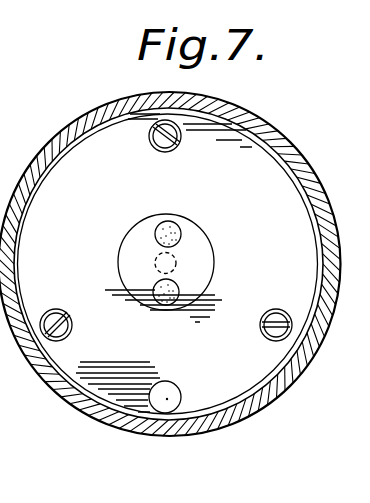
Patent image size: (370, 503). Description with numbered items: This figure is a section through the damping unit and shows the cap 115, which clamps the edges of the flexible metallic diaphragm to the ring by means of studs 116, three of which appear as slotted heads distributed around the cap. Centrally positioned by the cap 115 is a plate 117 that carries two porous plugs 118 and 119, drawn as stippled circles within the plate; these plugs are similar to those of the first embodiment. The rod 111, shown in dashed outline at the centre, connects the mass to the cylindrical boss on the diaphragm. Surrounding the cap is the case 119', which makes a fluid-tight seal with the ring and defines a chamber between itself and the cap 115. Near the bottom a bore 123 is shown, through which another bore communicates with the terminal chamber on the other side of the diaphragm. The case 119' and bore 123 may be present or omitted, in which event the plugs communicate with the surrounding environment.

The rod 111 is at (160, 271).
The cap 115 is at (253, 157).
The studs 116 is at (181, 121).
The plate 117 is at (176, 212).
The porous plug 118 is at (155, 233).
The porous plug 119 is at (207, 270).
The case 119' is at (168, 245).
The bore 123 is at (167, 400).